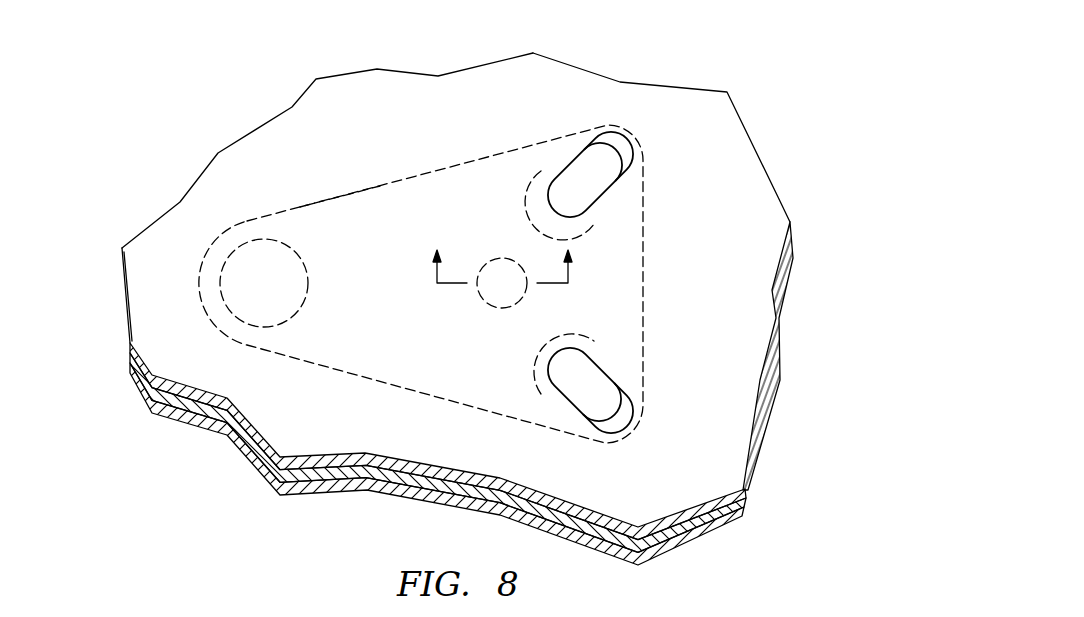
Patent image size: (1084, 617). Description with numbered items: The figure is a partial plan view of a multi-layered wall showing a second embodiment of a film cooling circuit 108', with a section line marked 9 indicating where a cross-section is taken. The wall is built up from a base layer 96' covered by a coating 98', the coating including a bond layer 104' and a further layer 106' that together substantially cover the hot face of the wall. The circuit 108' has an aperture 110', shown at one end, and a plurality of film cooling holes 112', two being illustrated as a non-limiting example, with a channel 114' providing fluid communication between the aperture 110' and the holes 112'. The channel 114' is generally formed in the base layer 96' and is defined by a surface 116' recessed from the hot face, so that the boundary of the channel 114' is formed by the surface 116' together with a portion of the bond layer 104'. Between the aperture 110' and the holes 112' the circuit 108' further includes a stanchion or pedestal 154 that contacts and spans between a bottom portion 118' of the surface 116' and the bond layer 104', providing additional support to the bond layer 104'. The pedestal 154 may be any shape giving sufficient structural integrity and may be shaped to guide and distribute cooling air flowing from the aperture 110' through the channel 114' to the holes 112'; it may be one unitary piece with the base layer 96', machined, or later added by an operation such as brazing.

The circuit 108' is at (457, 245).
The coating 98' is at (661, 119).
The surface 116' is at (362, 153).
The pedestal 154 is at (505, 278).
The film cooling holes 112' is at (641, 282).
The bottom portion 118' is at (474, 284).
The aperture 110' is at (264, 283).
The channel 114' is at (463, 356).
The first layer 106' is at (493, 441).
The bond layer 104' is at (492, 452).
The base layer 96' is at (472, 464).
The section line 9- 9 is at (504, 270).